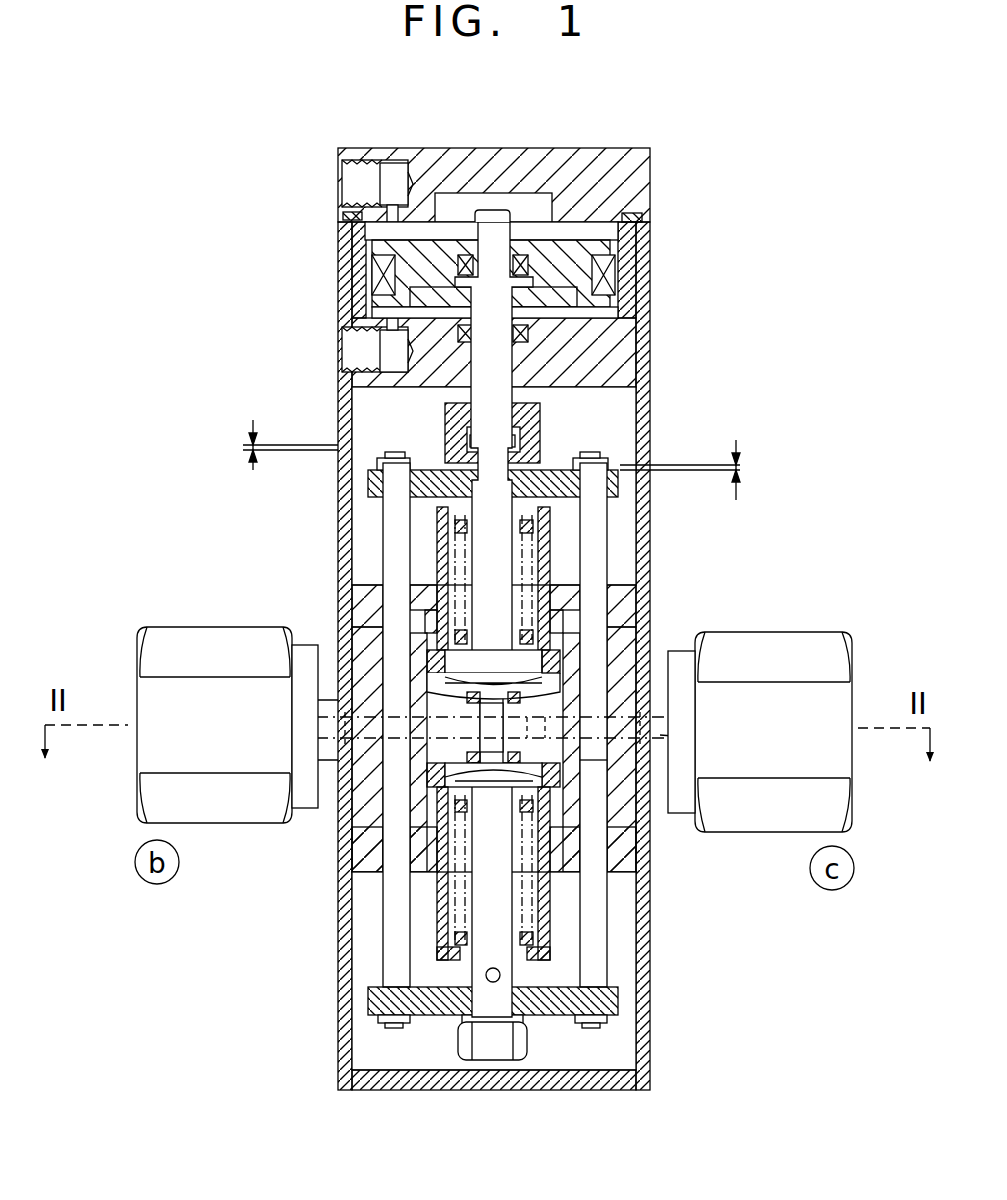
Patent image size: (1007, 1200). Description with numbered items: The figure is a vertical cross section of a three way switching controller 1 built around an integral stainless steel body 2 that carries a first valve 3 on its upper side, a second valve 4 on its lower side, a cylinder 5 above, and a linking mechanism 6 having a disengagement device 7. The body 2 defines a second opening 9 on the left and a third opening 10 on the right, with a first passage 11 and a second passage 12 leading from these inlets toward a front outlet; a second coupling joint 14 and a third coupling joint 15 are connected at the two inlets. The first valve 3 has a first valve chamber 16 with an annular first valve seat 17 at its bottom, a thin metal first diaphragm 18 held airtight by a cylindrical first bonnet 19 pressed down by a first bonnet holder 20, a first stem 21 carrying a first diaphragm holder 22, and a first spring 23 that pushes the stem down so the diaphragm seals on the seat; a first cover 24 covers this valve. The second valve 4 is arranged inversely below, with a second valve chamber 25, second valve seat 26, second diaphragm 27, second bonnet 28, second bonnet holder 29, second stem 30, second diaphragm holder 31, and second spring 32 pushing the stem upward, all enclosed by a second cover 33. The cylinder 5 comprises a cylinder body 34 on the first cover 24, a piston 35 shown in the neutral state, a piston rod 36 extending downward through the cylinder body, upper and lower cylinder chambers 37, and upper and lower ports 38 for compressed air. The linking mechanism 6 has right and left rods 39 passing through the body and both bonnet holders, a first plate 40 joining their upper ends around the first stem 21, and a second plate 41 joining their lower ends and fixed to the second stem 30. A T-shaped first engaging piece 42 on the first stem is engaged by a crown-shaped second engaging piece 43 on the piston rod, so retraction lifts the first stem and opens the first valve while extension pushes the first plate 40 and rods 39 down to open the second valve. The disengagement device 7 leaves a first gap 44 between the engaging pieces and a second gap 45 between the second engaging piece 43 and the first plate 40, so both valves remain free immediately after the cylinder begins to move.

The three way switching controller 1 is at (308, 100).
The body 2 is at (338, 828).
The first valve 3 is at (490, 578).
The second valve 4 is at (490, 897).
The cylinder 5 is at (655, 148).
The linking mechanism 6 is at (378, 560).
The disengagement device 7 is at (490, 407).
The second opening 9 is at (332, 738).
The third opening 10 is at (652, 738).
The first passage 11 is at (332, 719).
The second passage 12 is at (650, 722).
The second coupling joint 14 is at (160, 800).
The third coupling joint 15 is at (832, 808).
The first valve chamber 16 is at (560, 690).
The first valve seat 17 is at (450, 690).
The first diaphragm 18 is at (445, 668).
The first bonnet 19 is at (460, 522).
The first bonnet holder 20 is at (625, 612).
The first stem 21 is at (542, 550).
The first diaphragm holder 22 is at (556, 670).
The first spring 23 is at (448, 546).
The first cover 24 is at (365, 392).
The second valve chamber 25 is at (585, 765).
The second valve seat 26 is at (345, 805).
The second diaphragm 27 is at (560, 790).
The second bonnet 28 is at (548, 905).
The second bonnet holder 29 is at (440, 866).
The second stem 30 is at (478, 930).
The second diaphragm holder 31 is at (495, 786).
The second spring 32 is at (545, 942).
The second cover 33 is at (610, 1086).
The cylinder body 34 is at (640, 262).
The piston 35 is at (420, 262).
The piston rod 36 is at (497, 358).
The cylinder chambers 37 is at (540, 205).
The ports 38 is at (360, 187).
The rods 39 is at (392, 506).
The first plate 40 is at (612, 470).
The second plate 41 is at (445, 1002).
The first engaging piece 42 is at (575, 420).
The second engaging piece 43 is at (470, 440).
The first gap 44 is at (248, 446).
The second gap 45 is at (742, 466).